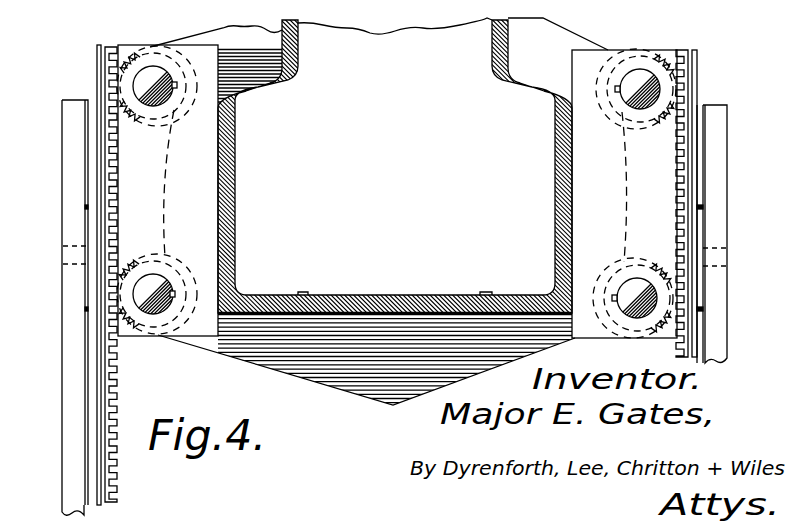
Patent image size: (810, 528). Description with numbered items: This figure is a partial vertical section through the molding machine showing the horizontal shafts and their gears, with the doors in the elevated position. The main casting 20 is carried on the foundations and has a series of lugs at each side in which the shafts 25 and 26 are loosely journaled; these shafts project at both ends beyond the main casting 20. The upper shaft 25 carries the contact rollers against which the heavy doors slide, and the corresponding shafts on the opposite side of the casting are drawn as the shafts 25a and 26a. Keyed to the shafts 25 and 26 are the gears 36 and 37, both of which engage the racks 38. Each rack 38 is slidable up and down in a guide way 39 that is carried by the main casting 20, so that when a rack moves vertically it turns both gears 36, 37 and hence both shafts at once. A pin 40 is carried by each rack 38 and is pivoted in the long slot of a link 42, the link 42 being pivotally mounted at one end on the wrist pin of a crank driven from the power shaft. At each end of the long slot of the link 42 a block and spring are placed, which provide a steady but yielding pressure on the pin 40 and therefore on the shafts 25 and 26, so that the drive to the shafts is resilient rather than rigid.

The main casting 20 is at (222, 28).
The upper shaft 25 is at (177, 97).
The lower shaft 26 is at (172, 284).
The upper right pinion shaft 25a is at (655, 88).
The lower right pinion shaft 26a is at (657, 303).
The gear 36 is at (128, 72).
The gear 37 is at (125, 294).
The rack 38 is at (110, 384).
The guide way 39 is at (135, 152).
The pin 40 is at (64, 260).
The link 42 is at (65, 364).